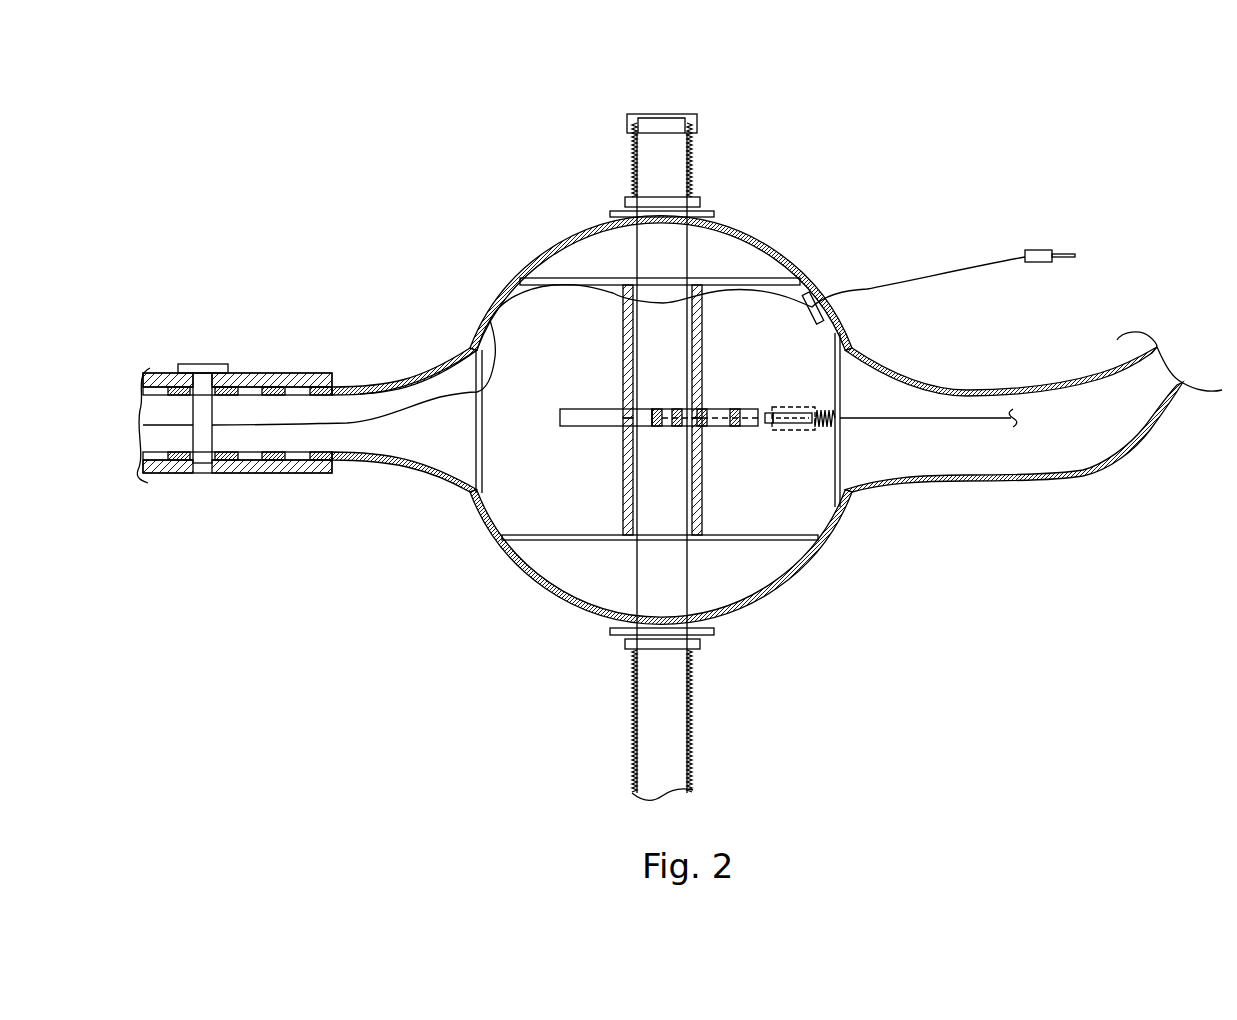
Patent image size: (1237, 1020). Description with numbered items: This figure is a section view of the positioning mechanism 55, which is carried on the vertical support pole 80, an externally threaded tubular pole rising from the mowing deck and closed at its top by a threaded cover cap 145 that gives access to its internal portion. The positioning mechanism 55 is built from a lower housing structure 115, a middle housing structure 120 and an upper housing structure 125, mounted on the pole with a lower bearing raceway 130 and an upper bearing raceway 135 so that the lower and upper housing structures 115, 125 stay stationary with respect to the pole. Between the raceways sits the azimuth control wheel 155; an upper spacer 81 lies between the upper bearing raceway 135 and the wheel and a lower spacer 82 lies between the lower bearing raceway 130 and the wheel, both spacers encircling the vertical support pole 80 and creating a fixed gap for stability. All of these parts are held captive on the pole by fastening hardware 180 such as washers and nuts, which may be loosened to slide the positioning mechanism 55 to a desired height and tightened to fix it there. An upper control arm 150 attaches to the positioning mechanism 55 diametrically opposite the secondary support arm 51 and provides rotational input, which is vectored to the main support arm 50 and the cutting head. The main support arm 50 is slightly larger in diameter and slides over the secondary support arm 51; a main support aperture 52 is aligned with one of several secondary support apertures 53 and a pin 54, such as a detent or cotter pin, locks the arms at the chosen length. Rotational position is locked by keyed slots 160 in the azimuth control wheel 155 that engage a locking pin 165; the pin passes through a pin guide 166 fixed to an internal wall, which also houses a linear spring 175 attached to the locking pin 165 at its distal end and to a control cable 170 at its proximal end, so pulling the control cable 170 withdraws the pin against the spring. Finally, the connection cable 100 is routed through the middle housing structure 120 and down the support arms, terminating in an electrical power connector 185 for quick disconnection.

The positioning mechanism 55 is at (1158, 151).
The main support arm 50 is at (234, 404).
The secondary support arm 51 is at (393, 463).
The main support aperture 52 is at (215, 380).
The secondary support apertures 53 is at (157, 454).
The pin 54 is at (193, 363).
The vertical support pole 80 is at (691, 177).
The upper spacer 81 is at (697, 380).
The lower spacer 82 is at (693, 472).
The connection cable 100 is at (412, 407).
The lower housing structure 115 is at (622, 562).
The middle housing structure 120 is at (508, 495).
The upper housing structure 125 is at (760, 245).
The lower bearing raceway 130 is at (790, 540).
The upper bearing raceway 135 is at (806, 281).
The threaded cover cap 145 is at (697, 116).
The upper control arm 150 is at (1115, 467).
The azimuth control wheel 155 is at (572, 412).
The keyed slots 160 is at (736, 428).
The locking pin 165 is at (785, 428).
The pin guide 166 is at (797, 408).
The control cable 170 is at (945, 415).
The linear spring 175 is at (837, 430).
The fastening hardware 180 is at (612, 214).
The electrical power connector 185 is at (1030, 250).